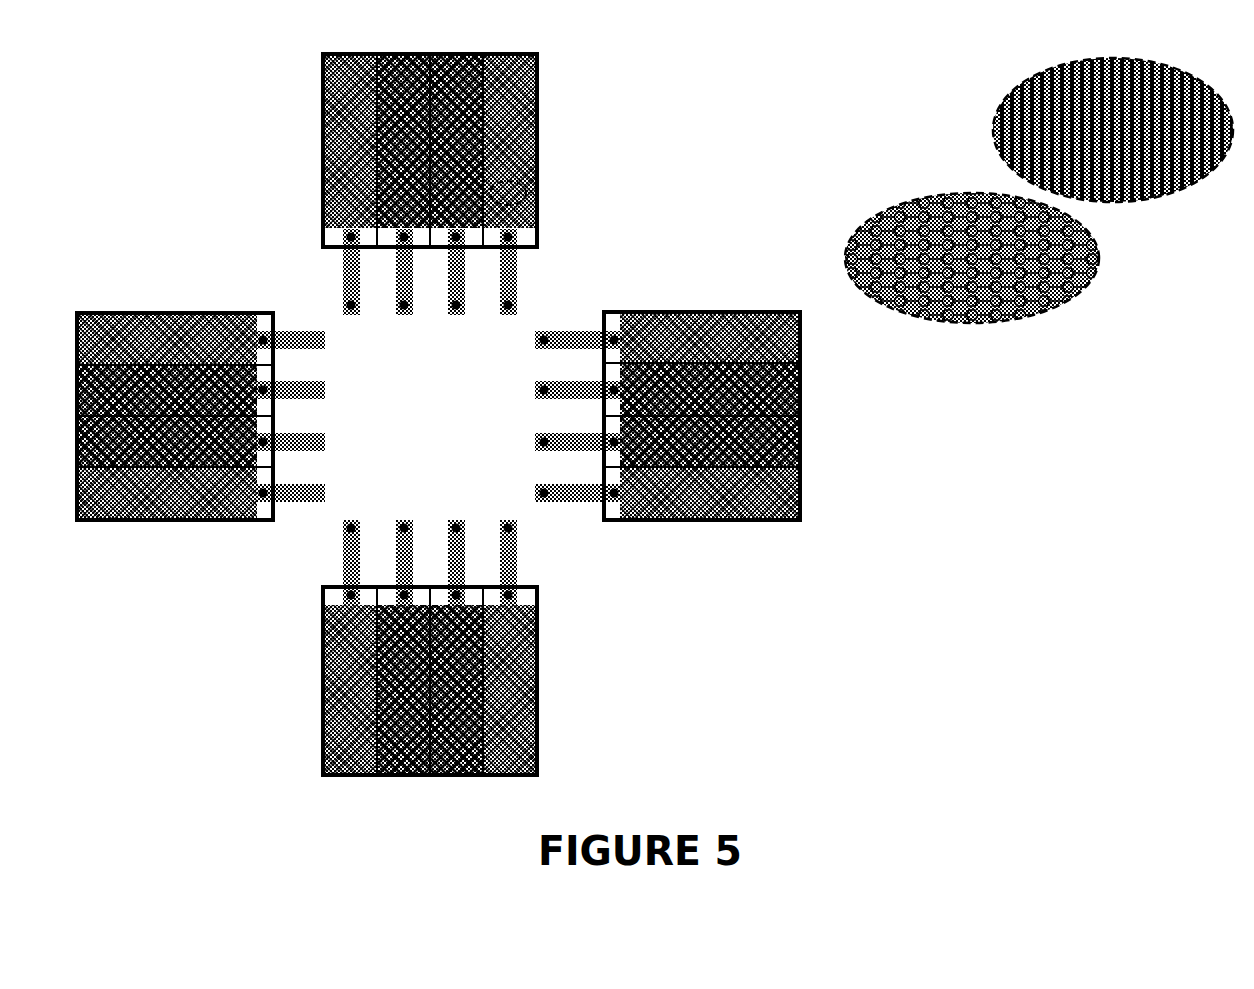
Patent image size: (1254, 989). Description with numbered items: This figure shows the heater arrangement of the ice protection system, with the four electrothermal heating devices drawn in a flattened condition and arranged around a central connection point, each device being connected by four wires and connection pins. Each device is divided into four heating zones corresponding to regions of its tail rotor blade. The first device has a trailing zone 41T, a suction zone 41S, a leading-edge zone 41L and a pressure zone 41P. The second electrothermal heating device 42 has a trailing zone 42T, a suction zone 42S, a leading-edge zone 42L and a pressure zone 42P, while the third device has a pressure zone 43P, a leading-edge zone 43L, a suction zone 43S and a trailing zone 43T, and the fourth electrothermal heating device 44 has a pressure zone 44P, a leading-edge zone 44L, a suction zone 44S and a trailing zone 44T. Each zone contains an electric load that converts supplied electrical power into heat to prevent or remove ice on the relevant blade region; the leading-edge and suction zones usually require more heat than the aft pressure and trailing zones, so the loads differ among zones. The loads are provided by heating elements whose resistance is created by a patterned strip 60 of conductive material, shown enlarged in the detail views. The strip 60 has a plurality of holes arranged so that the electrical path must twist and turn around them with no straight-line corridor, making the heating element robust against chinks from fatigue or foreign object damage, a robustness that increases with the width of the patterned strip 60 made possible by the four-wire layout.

The trailing zone 41T is at (350, 130).
The suction zone 41S is at (403, 130).
The leading-edge zone 41L is at (456, 130).
The pressure zone 41P is at (510, 130).
The electrothermal heating device 42 is at (711, 404).
The trailing zone 42T is at (729, 337).
The suction zone 42S is at (729, 389).
The leading-edge zone 42L is at (729, 441).
The pressure zone 42P is at (729, 493).
The pressure zone 43P is at (350, 704).
The leading-edge zone 43L is at (403, 704).
The suction zone 43S is at (456, 704).
The trailing zone 43T is at (510, 704).
The electrothermal heating device 44 is at (180, 431).
The pressure zone 44P is at (146, 339).
The leading-edge zone 44L is at (147, 390).
The suction zone 44S is at (146, 441).
The trailing zone 44T is at (146, 493).
The patterned strip 60 is at (380, 90).